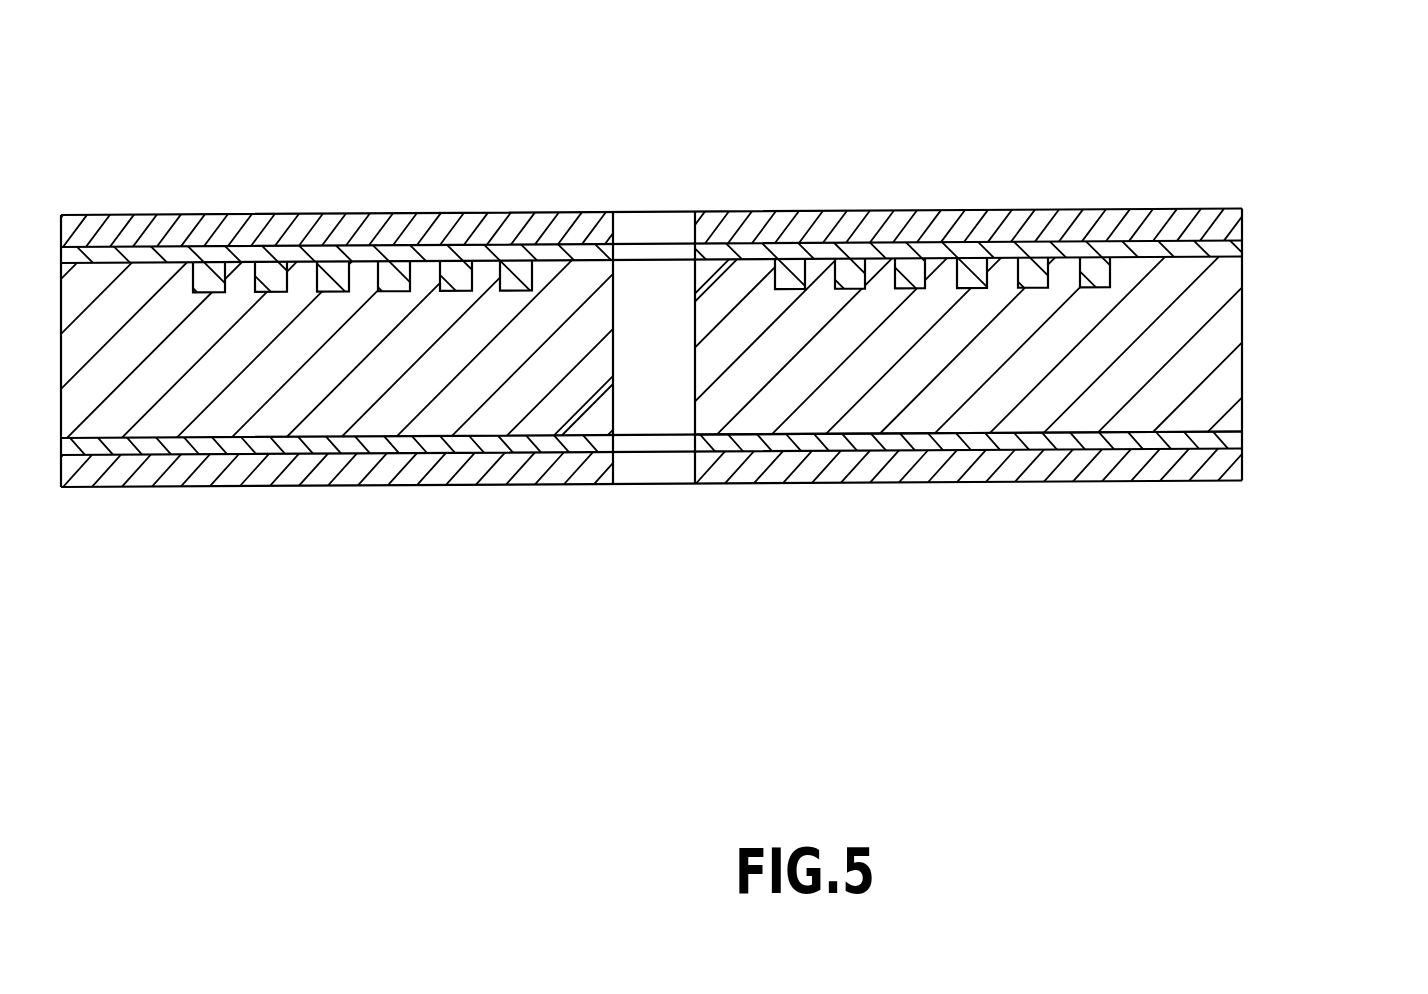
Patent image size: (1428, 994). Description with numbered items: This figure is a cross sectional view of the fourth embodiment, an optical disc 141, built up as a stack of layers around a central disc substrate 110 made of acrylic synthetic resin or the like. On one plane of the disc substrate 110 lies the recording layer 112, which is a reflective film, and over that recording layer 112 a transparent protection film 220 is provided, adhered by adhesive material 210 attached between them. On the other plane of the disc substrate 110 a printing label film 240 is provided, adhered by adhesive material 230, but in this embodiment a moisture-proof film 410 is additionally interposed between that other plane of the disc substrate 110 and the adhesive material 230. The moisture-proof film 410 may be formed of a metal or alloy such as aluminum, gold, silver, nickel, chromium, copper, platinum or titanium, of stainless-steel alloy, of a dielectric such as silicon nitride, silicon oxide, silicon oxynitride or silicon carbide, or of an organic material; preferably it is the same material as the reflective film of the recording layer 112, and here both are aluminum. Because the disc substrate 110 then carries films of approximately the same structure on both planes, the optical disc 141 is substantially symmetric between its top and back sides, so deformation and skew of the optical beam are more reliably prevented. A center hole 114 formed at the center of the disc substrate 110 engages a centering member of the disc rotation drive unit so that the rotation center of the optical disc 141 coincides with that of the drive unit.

The optical disc 141 is at (1205, 135).
The disc substrate 110 is at (1232, 365).
The recording layer 112 is at (345, 260).
The center hole 114 is at (692, 310).
The adhesive material 210 is at (1230, 250).
The transparent protection film 220 is at (1232, 227).
The adhesive material 230 is at (1232, 438).
The printing label film 240 is at (1232, 465).
The moisture-proof film 410 is at (1200, 431).